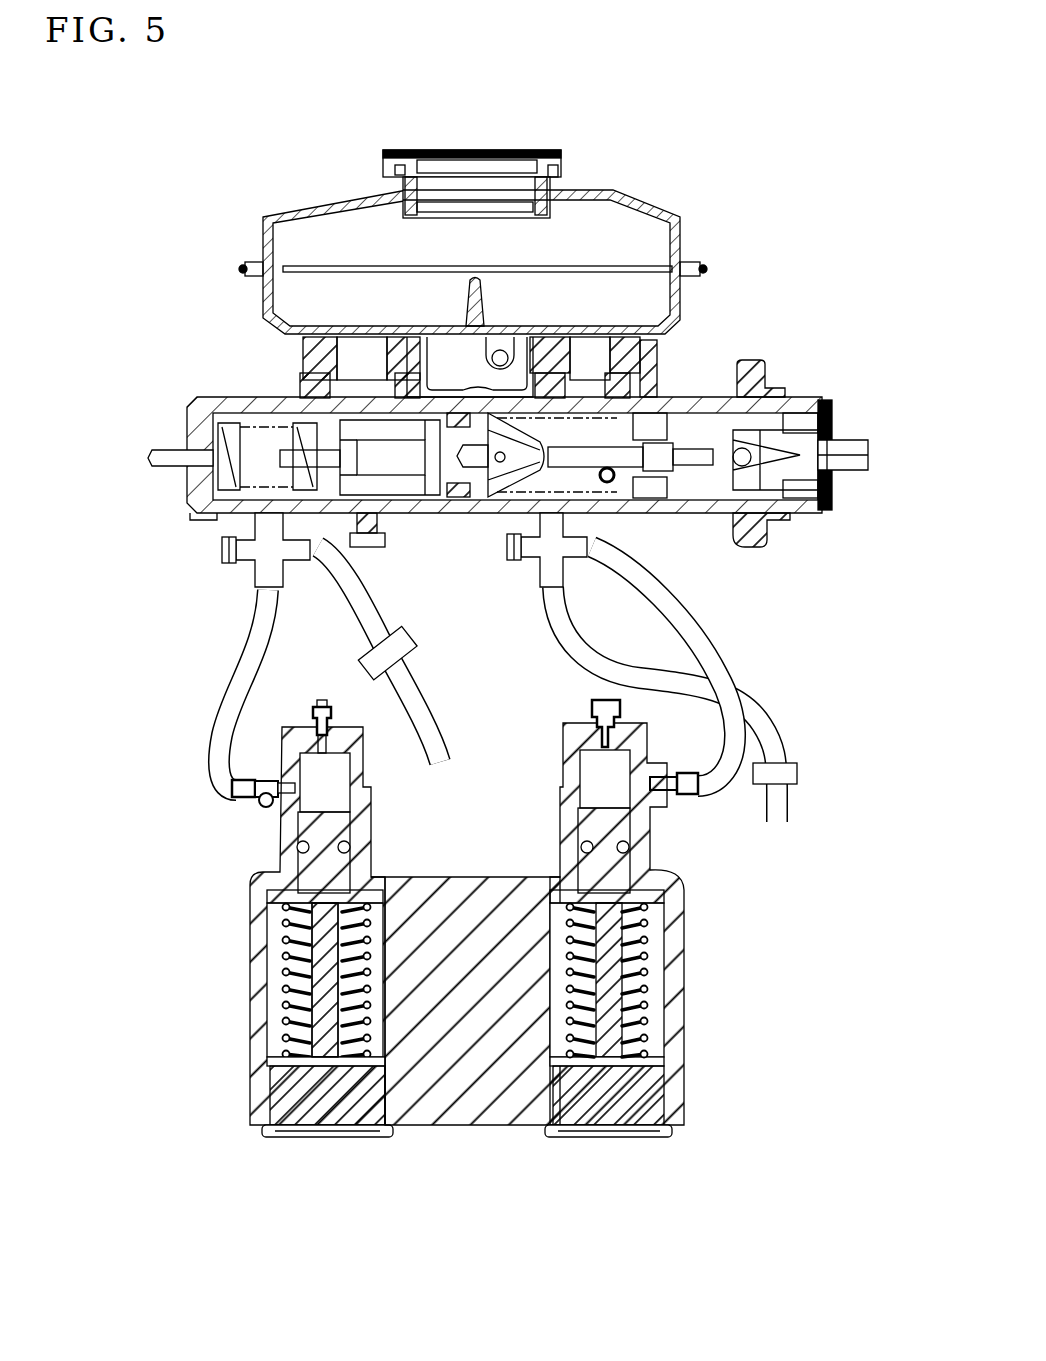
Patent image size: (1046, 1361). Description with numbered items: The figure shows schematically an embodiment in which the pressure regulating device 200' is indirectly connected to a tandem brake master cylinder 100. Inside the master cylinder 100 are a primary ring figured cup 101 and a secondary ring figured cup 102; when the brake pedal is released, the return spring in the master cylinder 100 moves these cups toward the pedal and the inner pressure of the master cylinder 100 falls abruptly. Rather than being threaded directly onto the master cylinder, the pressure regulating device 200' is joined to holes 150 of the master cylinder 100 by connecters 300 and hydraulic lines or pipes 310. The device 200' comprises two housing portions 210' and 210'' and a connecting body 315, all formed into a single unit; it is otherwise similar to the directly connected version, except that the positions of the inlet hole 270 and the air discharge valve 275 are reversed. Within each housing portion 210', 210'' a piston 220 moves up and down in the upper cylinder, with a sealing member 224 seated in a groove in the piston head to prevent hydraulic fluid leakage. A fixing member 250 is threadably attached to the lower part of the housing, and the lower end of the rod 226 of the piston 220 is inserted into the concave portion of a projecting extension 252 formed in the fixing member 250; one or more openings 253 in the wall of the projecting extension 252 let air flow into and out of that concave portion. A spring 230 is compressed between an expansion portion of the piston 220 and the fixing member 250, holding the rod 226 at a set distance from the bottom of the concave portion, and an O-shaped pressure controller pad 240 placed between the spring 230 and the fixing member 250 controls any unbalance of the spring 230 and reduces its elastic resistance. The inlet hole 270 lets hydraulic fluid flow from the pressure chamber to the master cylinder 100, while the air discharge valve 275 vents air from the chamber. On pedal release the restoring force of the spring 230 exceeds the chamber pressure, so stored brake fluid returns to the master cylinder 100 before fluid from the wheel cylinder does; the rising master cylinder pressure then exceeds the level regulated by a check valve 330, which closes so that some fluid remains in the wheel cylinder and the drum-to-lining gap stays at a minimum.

The tandem brake master cylinder 100 is at (750, 362).
The primary ring figured cup 101 is at (657, 398).
The secondary ring figured cup 102 is at (305, 398).
The hole 150 is at (263, 514).
The connecter 300 is at (268, 572).
The hydraulic line 310 is at (228, 733).
The check valve 330 is at (397, 647).
The air discharge valve 275 is at (322, 700).
The inlet hole 270 is at (663, 775).
The pressure regulating device 200' is at (501, 964).
The first housing portion 210' is at (395, 995).
The second housing portion 210'' is at (723, 930).
The piston 220 is at (308, 877).
The sealing member 224 is at (350, 847).
The rod 226 is at (327, 1037).
The projecting extension 252 is at (627, 1025).
The pressure controller pad 240 is at (293, 1064).
The fixing member 250 is at (293, 1128).
The opening 253 is at (362, 1015).
The spring 230 is at (388, 1062).
The connecting body 315 is at (530, 1117).